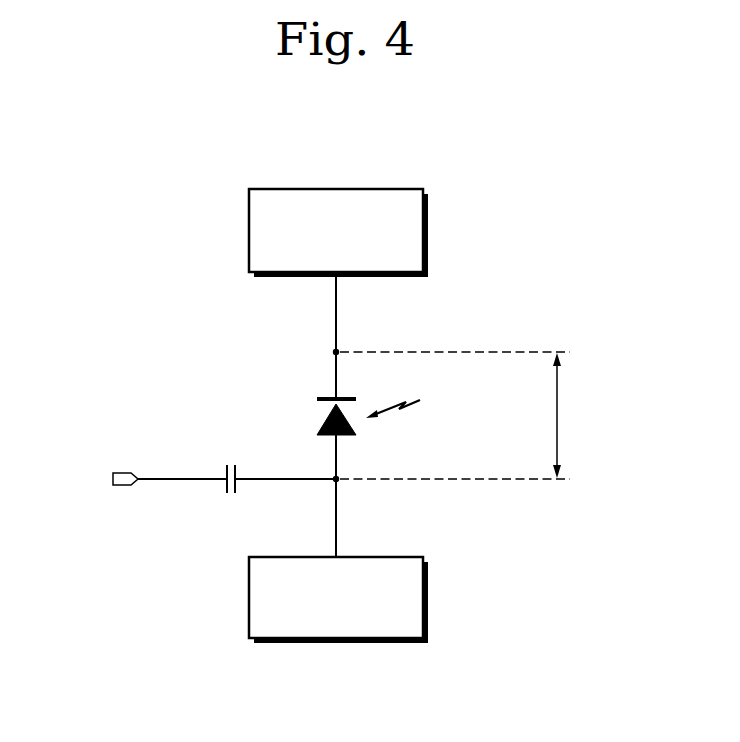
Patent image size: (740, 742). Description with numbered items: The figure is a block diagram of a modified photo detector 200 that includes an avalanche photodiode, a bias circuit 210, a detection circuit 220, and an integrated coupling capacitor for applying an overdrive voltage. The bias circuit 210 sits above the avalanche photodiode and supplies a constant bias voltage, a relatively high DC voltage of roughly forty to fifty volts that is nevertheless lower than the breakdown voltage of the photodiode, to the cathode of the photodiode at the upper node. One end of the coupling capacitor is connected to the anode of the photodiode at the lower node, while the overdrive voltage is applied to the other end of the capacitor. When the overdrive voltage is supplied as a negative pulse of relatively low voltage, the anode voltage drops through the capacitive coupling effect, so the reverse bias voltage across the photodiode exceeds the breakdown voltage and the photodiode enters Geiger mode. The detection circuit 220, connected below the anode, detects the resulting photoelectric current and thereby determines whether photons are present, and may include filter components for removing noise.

The photo detector 200 is at (472, 157).
The bias circuit 210 is at (428, 227).
The detection circuit 220 is at (428, 588).